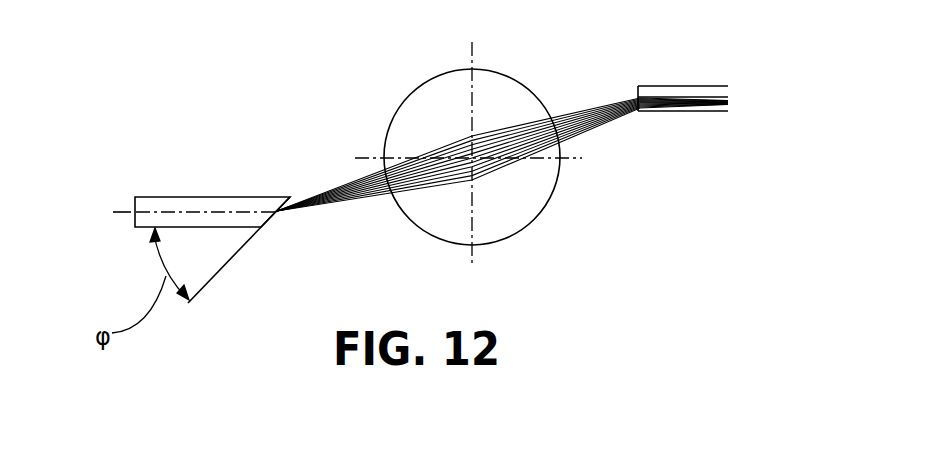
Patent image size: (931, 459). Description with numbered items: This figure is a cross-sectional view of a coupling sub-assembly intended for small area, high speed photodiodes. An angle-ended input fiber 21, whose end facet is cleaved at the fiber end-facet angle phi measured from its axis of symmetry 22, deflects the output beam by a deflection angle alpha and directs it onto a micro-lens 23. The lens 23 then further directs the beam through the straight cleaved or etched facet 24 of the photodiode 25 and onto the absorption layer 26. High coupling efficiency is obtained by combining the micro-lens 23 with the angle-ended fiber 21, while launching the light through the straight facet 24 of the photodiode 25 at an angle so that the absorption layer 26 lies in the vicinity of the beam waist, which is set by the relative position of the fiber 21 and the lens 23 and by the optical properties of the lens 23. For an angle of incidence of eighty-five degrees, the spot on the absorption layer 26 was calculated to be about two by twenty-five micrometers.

The angle-ended input fiber 21 is at (210, 195).
The axis of symmetry 22 is at (122, 214).
The micro-lens 23 is at (402, 103).
The straight cleaved or etched facet 24 is at (629, 90).
The photodiode 25 is at (688, 84).
The absorption layer 26 is at (703, 112).